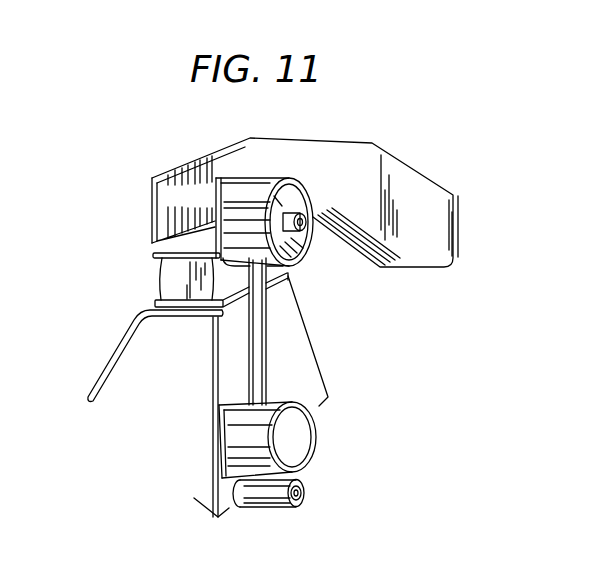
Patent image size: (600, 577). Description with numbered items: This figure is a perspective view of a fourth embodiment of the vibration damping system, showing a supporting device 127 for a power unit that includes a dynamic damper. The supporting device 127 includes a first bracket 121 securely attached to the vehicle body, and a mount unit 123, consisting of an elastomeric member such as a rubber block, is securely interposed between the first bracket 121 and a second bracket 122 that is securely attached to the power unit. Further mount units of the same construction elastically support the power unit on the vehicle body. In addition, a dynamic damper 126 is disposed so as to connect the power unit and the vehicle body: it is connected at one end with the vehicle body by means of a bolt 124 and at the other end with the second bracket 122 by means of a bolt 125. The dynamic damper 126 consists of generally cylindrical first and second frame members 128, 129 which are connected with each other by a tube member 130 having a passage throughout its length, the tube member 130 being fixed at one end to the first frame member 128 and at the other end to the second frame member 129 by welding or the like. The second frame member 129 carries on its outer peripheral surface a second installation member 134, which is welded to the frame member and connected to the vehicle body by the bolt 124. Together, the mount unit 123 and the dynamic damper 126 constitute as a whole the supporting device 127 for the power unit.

The first bracket 121 is at (108, 368).
The second bracket 122 is at (434, 196).
The mount unit 123 is at (172, 273).
The bolt 124 is at (298, 505).
The bolt 125 is at (310, 212).
The dynamic damper 126 is at (272, 327).
The supporting device 127 is at (338, 438).
The first frame member 128 is at (223, 221).
The second frame member 129 is at (228, 430).
The tube member 130 is at (262, 377).
The second installation member 134 is at (255, 502).